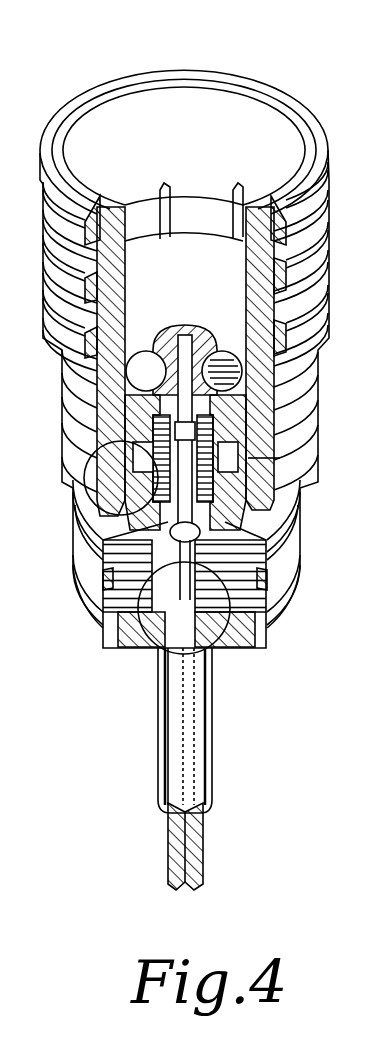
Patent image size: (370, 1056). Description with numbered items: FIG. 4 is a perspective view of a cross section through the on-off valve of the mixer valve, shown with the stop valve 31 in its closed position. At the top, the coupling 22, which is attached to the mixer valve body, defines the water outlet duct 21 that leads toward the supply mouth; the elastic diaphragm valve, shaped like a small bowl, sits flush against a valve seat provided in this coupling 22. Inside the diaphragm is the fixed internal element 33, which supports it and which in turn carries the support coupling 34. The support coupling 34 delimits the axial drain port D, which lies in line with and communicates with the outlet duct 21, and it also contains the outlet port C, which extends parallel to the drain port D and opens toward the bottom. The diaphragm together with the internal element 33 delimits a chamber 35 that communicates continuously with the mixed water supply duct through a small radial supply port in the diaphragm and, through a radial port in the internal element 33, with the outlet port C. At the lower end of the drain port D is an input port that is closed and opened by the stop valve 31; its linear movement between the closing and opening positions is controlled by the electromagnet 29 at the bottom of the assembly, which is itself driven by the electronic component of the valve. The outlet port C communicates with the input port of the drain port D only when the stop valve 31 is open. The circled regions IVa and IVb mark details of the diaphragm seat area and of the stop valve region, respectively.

The water outlet duct 21 is at (189, 276).
The coupling 22 is at (277, 92).
The electromagnet 29 is at (213, 757).
The stop valve 31 is at (182, 725).
The fixed internal element 33 is at (90, 487).
The support coupling 34 is at (242, 592).
The chamber 35 is at (290, 533).
The outlet port C is at (83, 595).
The axial drain port D is at (280, 458).
The detail IVa region IVa is at (95, 470).
The detail IVb region IVb is at (150, 640).